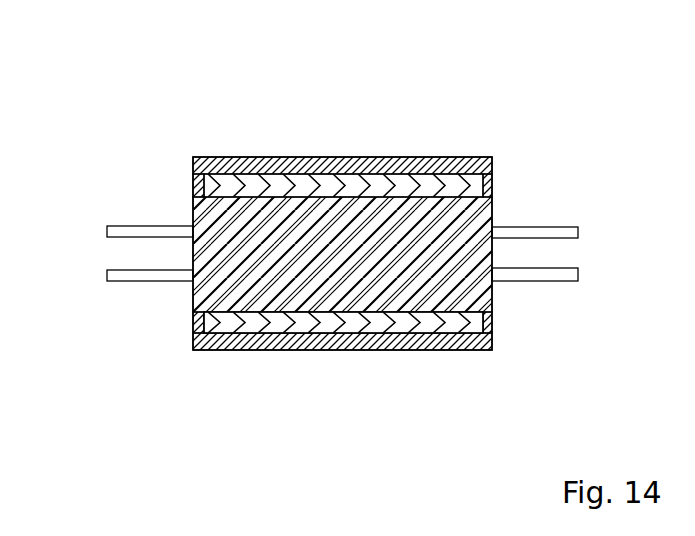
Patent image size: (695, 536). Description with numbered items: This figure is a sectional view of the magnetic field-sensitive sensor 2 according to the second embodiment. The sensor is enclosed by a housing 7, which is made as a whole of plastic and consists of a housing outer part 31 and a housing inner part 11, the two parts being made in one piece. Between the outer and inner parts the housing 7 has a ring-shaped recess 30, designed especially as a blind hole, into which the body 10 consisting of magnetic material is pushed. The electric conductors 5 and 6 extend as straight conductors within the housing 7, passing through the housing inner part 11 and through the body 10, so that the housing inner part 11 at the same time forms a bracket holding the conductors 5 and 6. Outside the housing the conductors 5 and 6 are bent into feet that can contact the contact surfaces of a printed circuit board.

The magnetic field-sensitive sensor 2 is at (196, 87).
The electric conductor 5 is at (115, 232).
The electric conductor 6 is at (120, 276).
The housing 7 is at (421, 158).
The body 10 is at (328, 324).
The housing inner part 11 is at (200, 208).
The ring-shaped recess 30 is at (196, 323).
The housing outer part 31 is at (330, 164).